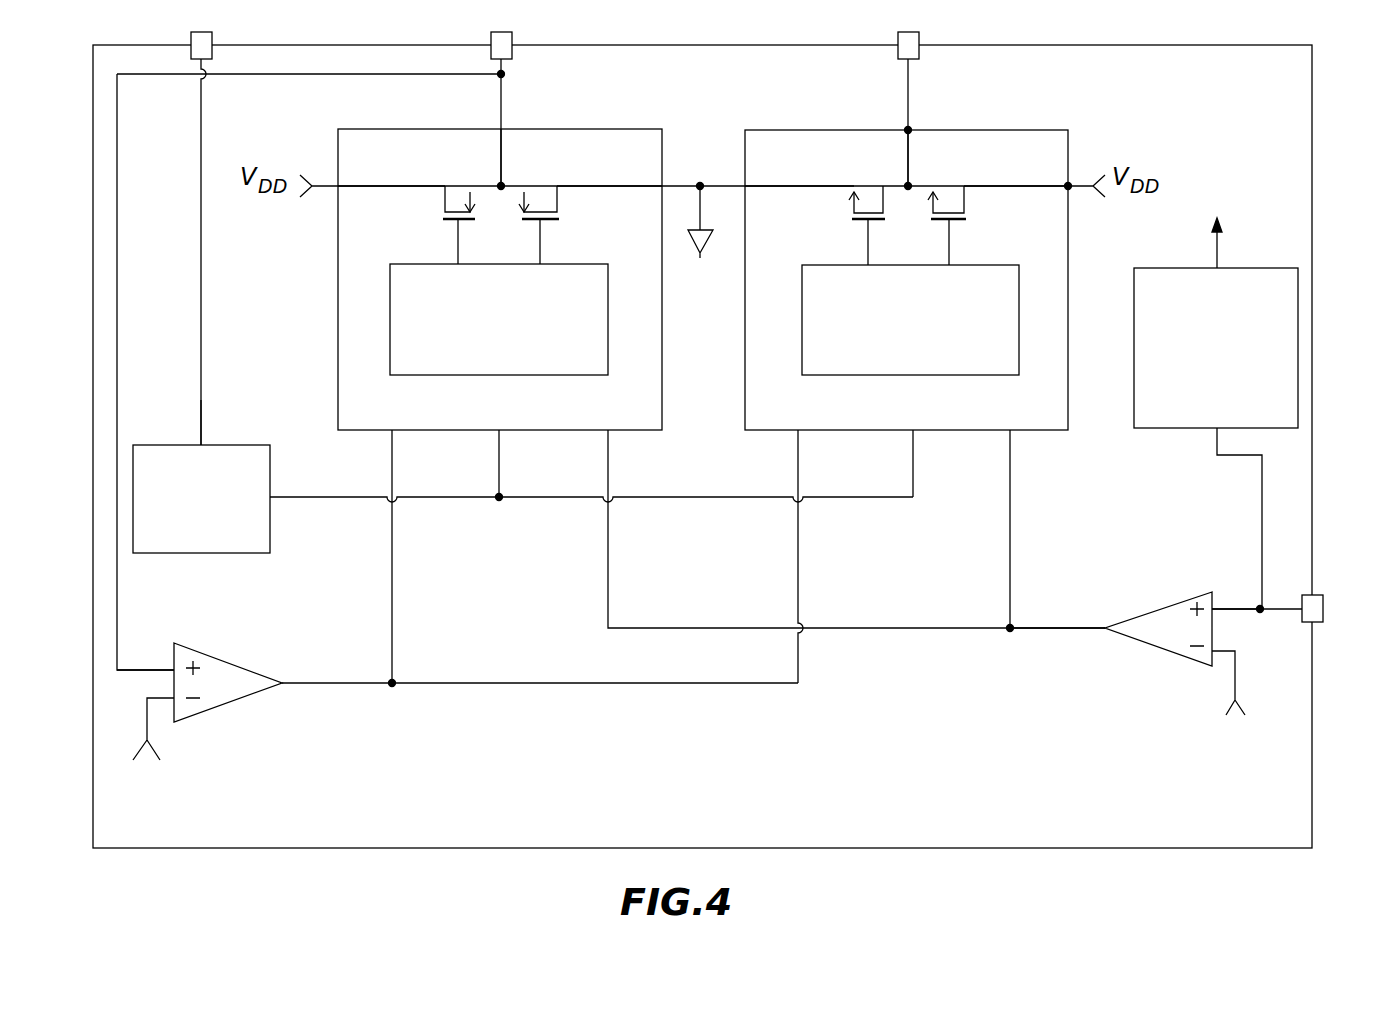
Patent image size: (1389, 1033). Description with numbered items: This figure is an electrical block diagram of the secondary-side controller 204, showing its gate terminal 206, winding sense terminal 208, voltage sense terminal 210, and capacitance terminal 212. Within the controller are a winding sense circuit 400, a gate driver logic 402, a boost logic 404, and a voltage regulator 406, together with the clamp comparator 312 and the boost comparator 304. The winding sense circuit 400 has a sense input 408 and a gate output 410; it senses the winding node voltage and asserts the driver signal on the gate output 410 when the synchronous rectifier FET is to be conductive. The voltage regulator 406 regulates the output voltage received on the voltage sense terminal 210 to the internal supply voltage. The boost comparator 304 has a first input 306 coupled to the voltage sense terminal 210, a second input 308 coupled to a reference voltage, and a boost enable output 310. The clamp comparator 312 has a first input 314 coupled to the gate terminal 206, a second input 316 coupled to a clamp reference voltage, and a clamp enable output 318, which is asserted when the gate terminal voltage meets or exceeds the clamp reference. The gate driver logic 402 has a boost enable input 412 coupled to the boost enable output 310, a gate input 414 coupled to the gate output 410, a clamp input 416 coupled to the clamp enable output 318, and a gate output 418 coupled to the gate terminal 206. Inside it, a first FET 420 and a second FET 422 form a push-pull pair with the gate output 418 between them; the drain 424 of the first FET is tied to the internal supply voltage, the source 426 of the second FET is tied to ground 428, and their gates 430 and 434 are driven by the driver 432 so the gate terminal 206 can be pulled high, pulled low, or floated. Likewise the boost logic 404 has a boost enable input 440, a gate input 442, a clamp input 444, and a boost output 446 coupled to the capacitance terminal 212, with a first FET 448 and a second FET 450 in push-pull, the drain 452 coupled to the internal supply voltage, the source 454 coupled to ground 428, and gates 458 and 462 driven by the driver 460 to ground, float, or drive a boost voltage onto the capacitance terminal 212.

The secondary-side controller 204 is at (93, 46).
The gate terminal 206 is at (512, 36).
The winding sense terminal 208 is at (212, 36).
The voltage sense terminal 210 is at (1323, 600).
The capacitance terminal 212 is at (919, 36).
The boost comparator 304 is at (1160, 606).
The first input 306 is at (1212, 598).
The second input 308 is at (1222, 655).
The boost enable output 310 is at (1106, 626).
The clamp comparator 312 is at (228, 660).
The first input 314 is at (173, 668).
The second input 316 is at (175, 700).
The clamp enable output 318 is at (282, 683).
The winding sense circuit 400 is at (232, 445).
The gate driver logic 402 is at (338, 250).
The boost logic 404 is at (745, 413).
The voltage regulator 406 is at (1134, 362).
The sense input 408 is at (200, 440).
The gate output 410 is at (272, 495).
The boost enable input 412 is at (610, 432).
The gate input 414 is at (500, 432).
The clamp input 416 is at (392, 432).
The gate output 418 is at (501, 129).
The first FET 420 is at (447, 168).
The second FET 422 is at (550, 165).
The drain 424 is at (350, 187).
The source 426 is at (577, 187).
The ground 428 is at (705, 242).
The gate 430 is at (458, 244).
The driver 432 is at (512, 334).
The gate 434 is at (540, 244).
The boost enable input 440 is at (1011, 432).
The gate input 442 is at (914, 432).
The clamp input 444 is at (800, 432).
The boost output 446 is at (908, 130).
The first FET 448 is at (925, 170).
The second FET 450 is at (875, 172).
The drain 452 is at (985, 186).
The source 454 is at (810, 186).
The gate 458 is at (949, 244).
The driver 460 is at (924, 334).
The gate 462 is at (868, 244).